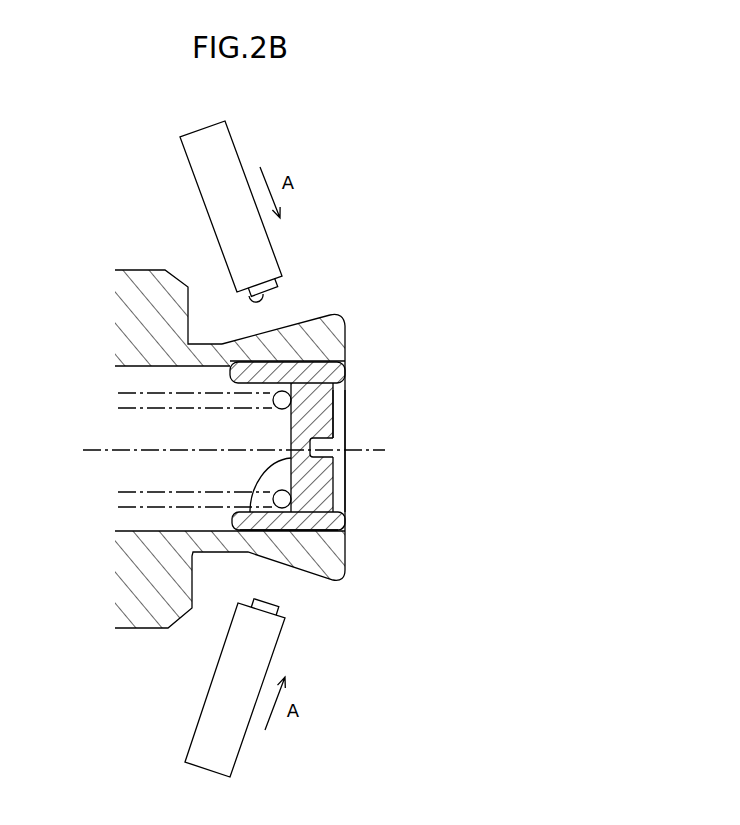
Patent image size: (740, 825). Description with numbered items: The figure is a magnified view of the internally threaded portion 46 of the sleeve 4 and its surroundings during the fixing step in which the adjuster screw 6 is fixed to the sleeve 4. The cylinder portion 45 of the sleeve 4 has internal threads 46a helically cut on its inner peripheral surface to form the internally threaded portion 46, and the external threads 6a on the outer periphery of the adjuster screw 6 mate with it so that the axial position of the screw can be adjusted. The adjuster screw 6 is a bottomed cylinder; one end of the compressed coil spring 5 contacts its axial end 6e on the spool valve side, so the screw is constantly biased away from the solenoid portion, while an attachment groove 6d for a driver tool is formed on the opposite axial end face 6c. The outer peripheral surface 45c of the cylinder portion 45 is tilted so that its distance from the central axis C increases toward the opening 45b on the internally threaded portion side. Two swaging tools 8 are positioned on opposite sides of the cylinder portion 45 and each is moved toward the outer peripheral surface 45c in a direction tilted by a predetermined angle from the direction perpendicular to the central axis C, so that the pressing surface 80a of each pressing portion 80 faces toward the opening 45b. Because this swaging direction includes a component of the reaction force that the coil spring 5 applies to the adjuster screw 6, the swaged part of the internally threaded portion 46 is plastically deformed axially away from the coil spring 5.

The sleeve 4 is at (268, 437).
The coil spring 5 is at (130, 502).
The adjuster screw 6 is at (323, 457).
The external threads 6a is at (291, 531).
The axial end face 6c is at (333, 413).
The attachment groove 6d is at (335, 450).
The axial end 6e is at (262, 463).
The swaging tool 8 is at (268, 238).
The cylinder portion 45 is at (348, 302).
The opening 45b is at (361, 504).
The outer peripheral surface 45c is at (273, 333).
The internally threaded portion 46 is at (355, 346).
The internal threads 46a is at (345, 535).
The pressing portion 80 is at (275, 283).
The pressing surface 80a is at (251, 306).
The central axis C is at (97, 452).